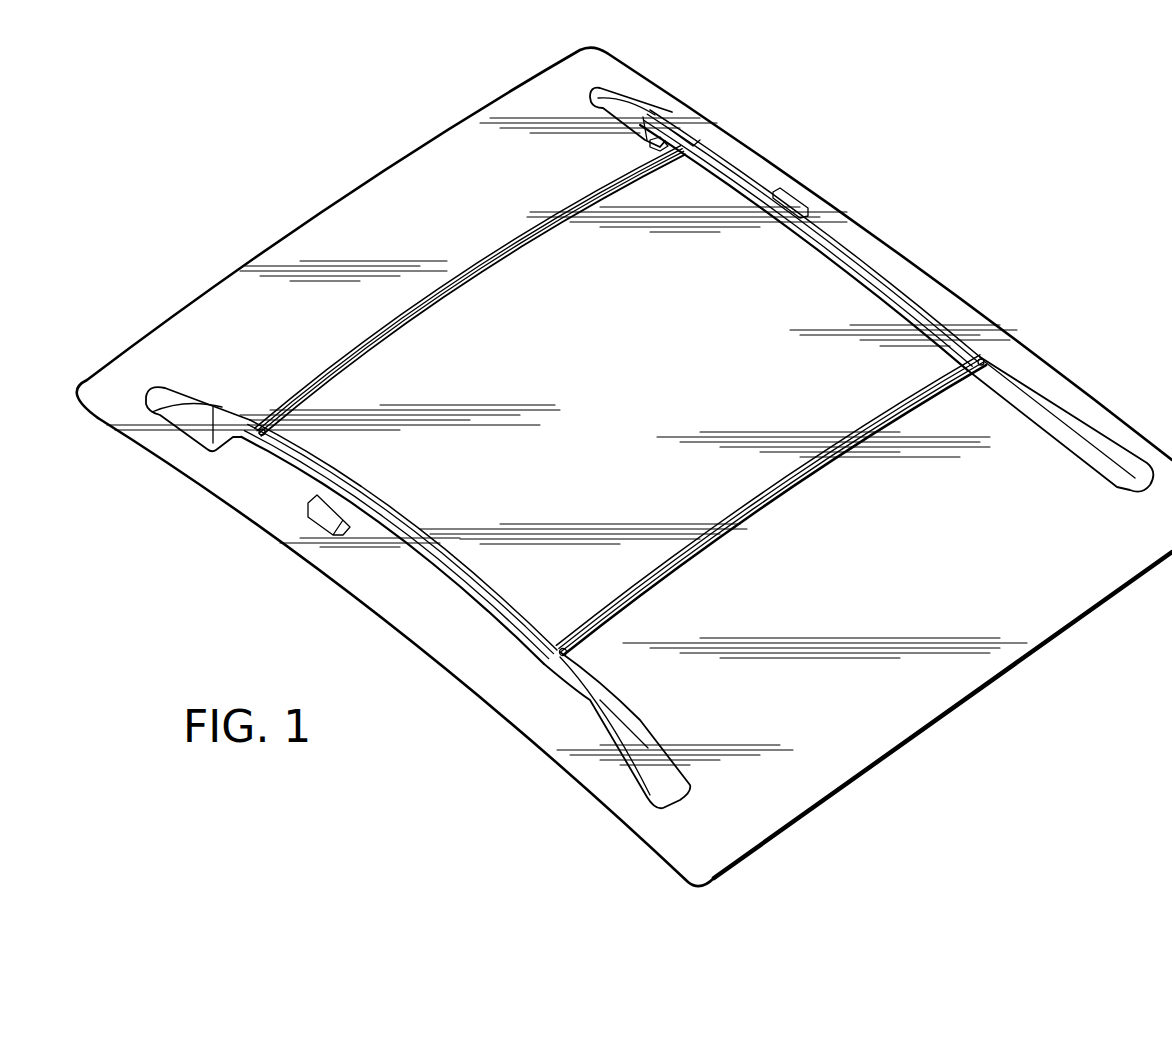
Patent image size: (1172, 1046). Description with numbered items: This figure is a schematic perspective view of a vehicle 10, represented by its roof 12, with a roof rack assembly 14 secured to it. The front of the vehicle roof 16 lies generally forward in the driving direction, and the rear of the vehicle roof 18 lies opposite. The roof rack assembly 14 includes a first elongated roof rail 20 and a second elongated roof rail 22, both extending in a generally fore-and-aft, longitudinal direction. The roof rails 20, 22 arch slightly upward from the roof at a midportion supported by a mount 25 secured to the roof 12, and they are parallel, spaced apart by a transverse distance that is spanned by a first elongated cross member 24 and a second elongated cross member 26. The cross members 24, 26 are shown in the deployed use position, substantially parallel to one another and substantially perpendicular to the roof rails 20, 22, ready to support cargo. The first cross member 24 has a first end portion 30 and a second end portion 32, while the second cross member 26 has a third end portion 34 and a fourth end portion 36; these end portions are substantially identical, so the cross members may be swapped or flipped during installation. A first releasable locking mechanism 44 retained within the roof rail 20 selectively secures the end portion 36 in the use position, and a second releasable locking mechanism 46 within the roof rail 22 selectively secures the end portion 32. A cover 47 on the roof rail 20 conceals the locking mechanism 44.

The vehicle 10 is at (649, 427).
The roof 12 is at (624, 467).
The roof rack assembly 14 is at (680, 108).
The front of the vehicle roof 16 is at (297, 228).
The rear of the vehicle roof 18 is at (963, 690).
The first elongated roof rail 20 is at (442, 597).
The second elongated roof rail 22 is at (871, 269).
The first elongated cross member 24 is at (460, 278).
The mount 25 is at (318, 520).
The second elongated cross member 26 is at (760, 498).
The first end portion 30 is at (265, 432).
The second end portion 32 is at (647, 157).
The third end portion 34 is at (950, 377).
The fourth end portion 36 is at (565, 648).
The first releasable locking mechanism 44 is at (545, 675).
The second releasable locking mechanism 46 is at (695, 130).
The cover 47 is at (647, 743).